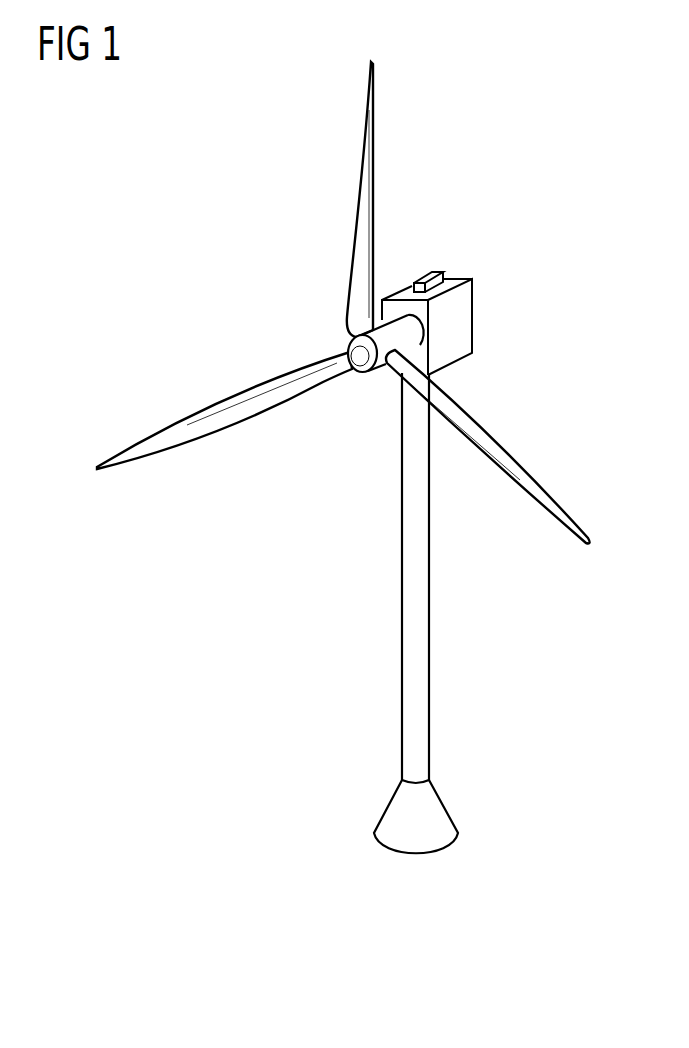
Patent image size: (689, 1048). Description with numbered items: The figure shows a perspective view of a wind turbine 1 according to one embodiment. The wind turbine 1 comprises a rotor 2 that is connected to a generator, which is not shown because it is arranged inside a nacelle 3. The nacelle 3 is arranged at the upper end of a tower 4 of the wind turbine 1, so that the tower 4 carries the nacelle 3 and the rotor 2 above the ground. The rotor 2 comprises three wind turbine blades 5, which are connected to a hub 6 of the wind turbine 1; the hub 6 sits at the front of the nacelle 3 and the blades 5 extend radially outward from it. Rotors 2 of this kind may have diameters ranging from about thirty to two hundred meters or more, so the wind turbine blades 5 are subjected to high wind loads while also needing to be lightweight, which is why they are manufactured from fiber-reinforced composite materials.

The wind turbine 1 is at (198, 203).
The rotor 2 is at (201, 398).
The nacelle 3 is at (457, 325).
The tower 4 is at (421, 730).
The wind turbine blade 5 is at (362, 209).
The hub 6 is at (407, 342).